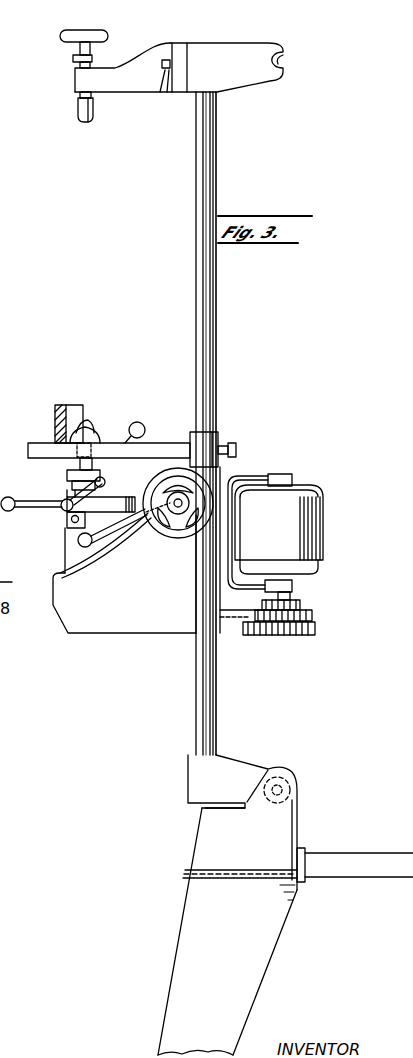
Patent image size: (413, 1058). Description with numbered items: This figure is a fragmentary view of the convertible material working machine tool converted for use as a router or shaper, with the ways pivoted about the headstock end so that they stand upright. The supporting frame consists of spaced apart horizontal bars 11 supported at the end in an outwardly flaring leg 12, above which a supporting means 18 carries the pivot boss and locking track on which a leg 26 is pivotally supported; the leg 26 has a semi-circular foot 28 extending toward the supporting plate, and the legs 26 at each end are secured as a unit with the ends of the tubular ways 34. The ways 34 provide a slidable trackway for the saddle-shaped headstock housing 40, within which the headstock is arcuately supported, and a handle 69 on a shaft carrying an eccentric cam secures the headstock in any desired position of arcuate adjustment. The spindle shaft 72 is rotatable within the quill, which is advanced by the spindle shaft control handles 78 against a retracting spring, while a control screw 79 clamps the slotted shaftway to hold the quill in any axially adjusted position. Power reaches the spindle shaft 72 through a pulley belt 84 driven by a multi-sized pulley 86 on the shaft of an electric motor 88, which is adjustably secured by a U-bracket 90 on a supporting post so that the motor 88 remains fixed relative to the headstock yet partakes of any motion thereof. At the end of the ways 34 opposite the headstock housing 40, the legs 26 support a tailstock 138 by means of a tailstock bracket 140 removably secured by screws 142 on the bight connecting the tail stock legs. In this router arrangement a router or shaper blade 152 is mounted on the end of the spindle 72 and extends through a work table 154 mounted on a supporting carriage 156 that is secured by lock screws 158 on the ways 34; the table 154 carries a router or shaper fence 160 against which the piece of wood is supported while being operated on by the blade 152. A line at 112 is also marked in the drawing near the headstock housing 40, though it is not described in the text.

The horizontal bars 11 is at (330, 866).
The leg 12 is at (172, 953).
The supporting means 18 is at (212, 808).
The leg 26 is at (255, 53).
The semi-circular foot 28 is at (282, 61).
The tubular way 34 is at (215, 341).
The headstock housing 40 is at (157, 634).
The handle 69 is at (113, 532).
The spindle shaft 72 is at (78, 464).
The spindle shaft control handles 78 is at (34, 508).
The control screw 79 is at (66, 512).
The pulley belt 84 is at (238, 620).
The multi-sized pulley 86 is at (300, 626).
The electric motor 88 is at (325, 516).
The U-bracket 90 is at (262, 480).
The line 112 is at (22, 584).
The tailstock 138 is at (93, 112).
The tailstock bracket 140 is at (118, 70).
The screws 142 is at (163, 74).
The router or shaper blade 152 is at (90, 436).
The work table 154 is at (160, 443).
The supporting carriage 156 is at (213, 438).
The lock screws 158 is at (237, 450).
The router or shaper fence 160 is at (60, 405).